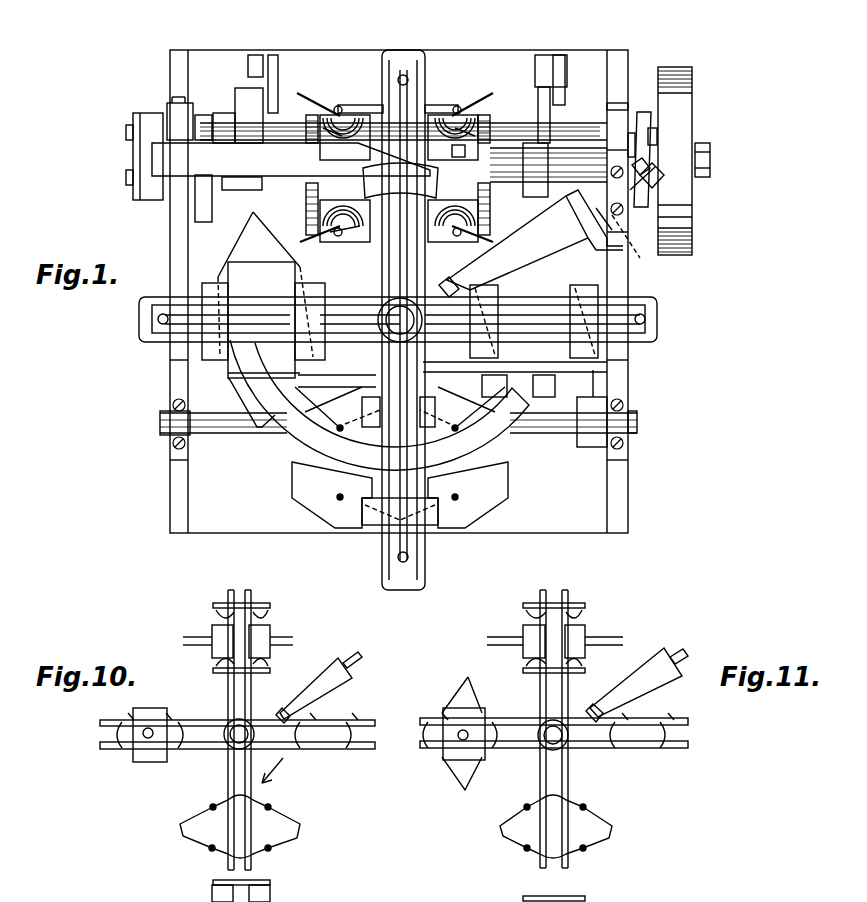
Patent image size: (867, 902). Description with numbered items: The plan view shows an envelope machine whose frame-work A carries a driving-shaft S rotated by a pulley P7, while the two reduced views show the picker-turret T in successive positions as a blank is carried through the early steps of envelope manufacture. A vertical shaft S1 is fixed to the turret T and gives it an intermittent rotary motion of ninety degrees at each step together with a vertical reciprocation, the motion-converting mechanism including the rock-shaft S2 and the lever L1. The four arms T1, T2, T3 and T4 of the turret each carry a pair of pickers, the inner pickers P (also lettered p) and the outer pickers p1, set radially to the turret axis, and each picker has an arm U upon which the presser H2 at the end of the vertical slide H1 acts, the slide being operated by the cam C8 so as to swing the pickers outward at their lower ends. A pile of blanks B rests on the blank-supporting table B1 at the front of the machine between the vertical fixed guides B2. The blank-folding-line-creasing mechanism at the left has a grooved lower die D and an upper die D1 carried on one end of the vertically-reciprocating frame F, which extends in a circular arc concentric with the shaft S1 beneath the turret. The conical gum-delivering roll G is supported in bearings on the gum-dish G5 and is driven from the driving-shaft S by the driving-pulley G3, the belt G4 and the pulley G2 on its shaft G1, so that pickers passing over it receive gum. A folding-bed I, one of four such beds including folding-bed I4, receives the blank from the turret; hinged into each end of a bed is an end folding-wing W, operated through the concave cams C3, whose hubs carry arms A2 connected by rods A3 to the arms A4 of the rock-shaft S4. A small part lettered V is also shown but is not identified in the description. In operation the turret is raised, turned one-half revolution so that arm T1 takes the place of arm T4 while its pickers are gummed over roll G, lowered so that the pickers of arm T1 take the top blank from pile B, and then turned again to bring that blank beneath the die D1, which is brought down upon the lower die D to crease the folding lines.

In FIG. 1, the frame-work A is at (399, 291).
In FIG. 1, the arms A2 is at (385, 170).
In FIG. 1, the rods A3 is at (274, 58).
In FIG. 1, the arms of rock-shaft A4 is at (240, 90).
In FIG. 1, the pile of blanks B is at (400, 495).
In FIG. 10, the pile of blanks B is at (240, 826).
In FIG. 11, the pile of blanks B is at (556, 826).
In FIG. 1, the blank-supporting table B1 is at (368, 506).
In FIG. 1, the vertical fixed guides B2 is at (340, 502).
In FIG. 1, the cams C3 is at (300, 186).
In FIG. 1, the cam C8 is at (140, 112).
In FIG. 1, the lower die D is at (226, 385).
In FIG. 1, the upper die D1 is at (289, 323).
In FIG. 10, the upper die D1 is at (143, 762).
In FIG. 1, the vertically-reciprocating frame F is at (379, 405).
In FIG. 1, the gum-delivering roll G is at (513, 246).
In FIG. 10, the gum-delivering roll G is at (312, 717).
In FIG. 11, the gum-delivering roll G is at (637, 685).
In FIG. 1, the shaft G1 is at (625, 242).
In FIG. 1, the pulley G2 is at (652, 172).
In FIG. 1, the driving-pulley G3 is at (655, 152).
In FIG. 1, the belt G4 is at (643, 112).
In FIG. 1, the gum-dish G5 is at (590, 231).
In FIG. 1, the vertical slide H1 is at (291, 159).
In FIG. 1, the presser H2 is at (340, 172).
In FIG. 10, the folding-bed I is at (212, 630).
In FIG. 11, the folding-bed I is at (523, 630).
In FIG. 1, the folding-bed I4 is at (437, 103).
In FIG. 1, the lever L1 is at (398, 404).
In FIG. 1, the pickers P is at (358, 245).
In FIG. 10, the pickers P is at (272, 668).
In FIG. 11, the pickers P is at (523, 666).
In FIG. 1, the picker p is at (420, 400).
In FIG. 1, the pulley P7 is at (690, 88).
In FIG. 1, the outer pickers p1 is at (160, 320).
In FIG. 10, the outer pickers p1 is at (268, 617).
In FIG. 11, the outer pickers p1 is at (585, 617).
In FIG. 1, the driving-shaft S is at (708, 160).
In FIG. 1, the vertical shaft S1 is at (400, 320).
In FIG. 10, the vertical shaft S1 is at (228, 748).
In FIG. 11, the vertical shaft S1 is at (543, 748).
In FIG. 1, the rock-shaft S2 is at (624, 432).
In FIG. 1, the rock-shaft S4 is at (585, 128).
In FIG. 1, the picker-turret T is at (420, 556).
In FIG. 10, the picker-turret T is at (200, 718).
In FIG. 11, the picker-turret T is at (570, 594).
In FIG. 10, the turret arm T1 is at (231, 590).
In FIG. 11, the turret arm T1 is at (424, 755).
In FIG. 10, the turret arm T2 is at (247, 734).
In FIG. 11, the turret arm T2 is at (543, 590).
In FIG. 10, the turret arm T3 is at (226, 868).
In FIG. 11, the turret arm T3 is at (690, 722).
In FIG. 10, the turret arm T4 is at (100, 723).
In FIG. 11, the turret arm T4 is at (575, 862).
In FIG. 1, the arms of the pickers U is at (545, 318).
In FIG. 1, the bracket V is at (203, 198).
In FIG. 1, the end folding-wing W is at (316, 98).